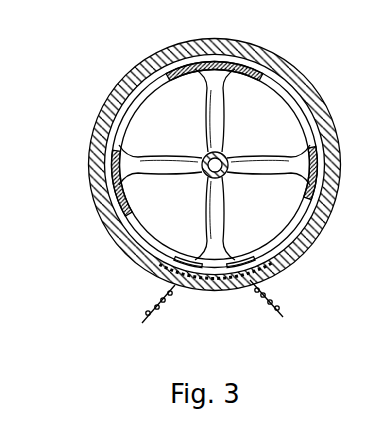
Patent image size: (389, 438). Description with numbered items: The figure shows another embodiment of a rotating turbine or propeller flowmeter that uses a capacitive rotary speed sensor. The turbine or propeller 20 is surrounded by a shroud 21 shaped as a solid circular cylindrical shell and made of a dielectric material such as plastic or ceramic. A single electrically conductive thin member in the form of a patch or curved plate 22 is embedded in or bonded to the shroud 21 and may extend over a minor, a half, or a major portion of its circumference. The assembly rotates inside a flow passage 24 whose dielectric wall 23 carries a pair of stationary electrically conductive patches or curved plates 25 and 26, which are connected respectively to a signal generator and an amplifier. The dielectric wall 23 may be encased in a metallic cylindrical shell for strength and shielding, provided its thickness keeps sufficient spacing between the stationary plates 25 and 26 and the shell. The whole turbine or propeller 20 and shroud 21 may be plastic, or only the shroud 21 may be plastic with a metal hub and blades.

The turbine or propeller 20 is at (222, 116).
The shroud 21 is at (174, 92).
The electrically conductive patch or curved plate 22 is at (188, 258).
The dielectric wall 23 is at (118, 100).
The flow passage 24 is at (158, 206).
The stationary electrically conductive patch or curved plate 25 is at (158, 288).
The stationary electrically conductive patch or curved plate 26 is at (263, 281).